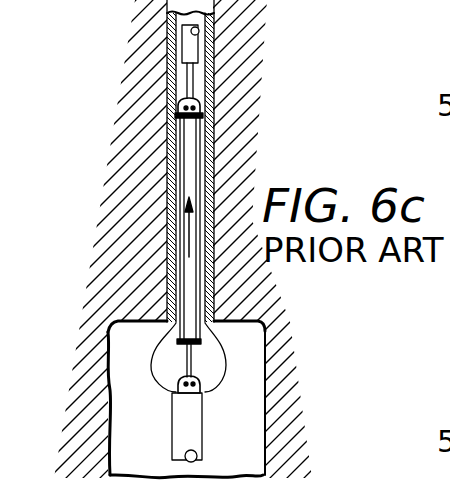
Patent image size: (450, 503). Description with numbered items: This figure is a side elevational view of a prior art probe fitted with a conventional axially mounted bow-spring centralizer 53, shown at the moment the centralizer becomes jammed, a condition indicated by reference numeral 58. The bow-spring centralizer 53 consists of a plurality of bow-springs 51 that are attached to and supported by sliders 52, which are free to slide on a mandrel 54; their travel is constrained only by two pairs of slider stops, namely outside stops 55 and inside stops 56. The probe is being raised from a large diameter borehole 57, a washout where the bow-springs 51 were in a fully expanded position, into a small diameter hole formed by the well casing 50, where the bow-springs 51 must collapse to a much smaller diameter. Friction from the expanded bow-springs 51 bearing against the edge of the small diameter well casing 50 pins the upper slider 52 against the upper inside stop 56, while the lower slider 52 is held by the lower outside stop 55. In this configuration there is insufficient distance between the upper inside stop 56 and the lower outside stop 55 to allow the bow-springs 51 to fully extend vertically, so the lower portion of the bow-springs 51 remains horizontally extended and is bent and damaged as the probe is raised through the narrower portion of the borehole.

The well casing 50 is at (167, 205).
The bow-springs 51 is at (183, 110).
The sliders 52 is at (199, 103).
The bow-spring centralizer 53 is at (189, 6).
The mandrel 54 is at (180, 82).
The outside stops 55 is at (194, 44).
The inside stops 56 is at (205, 128).
The large diameter borehole 57 is at (247, 358).
The jammed condition 58 is at (262, 383).